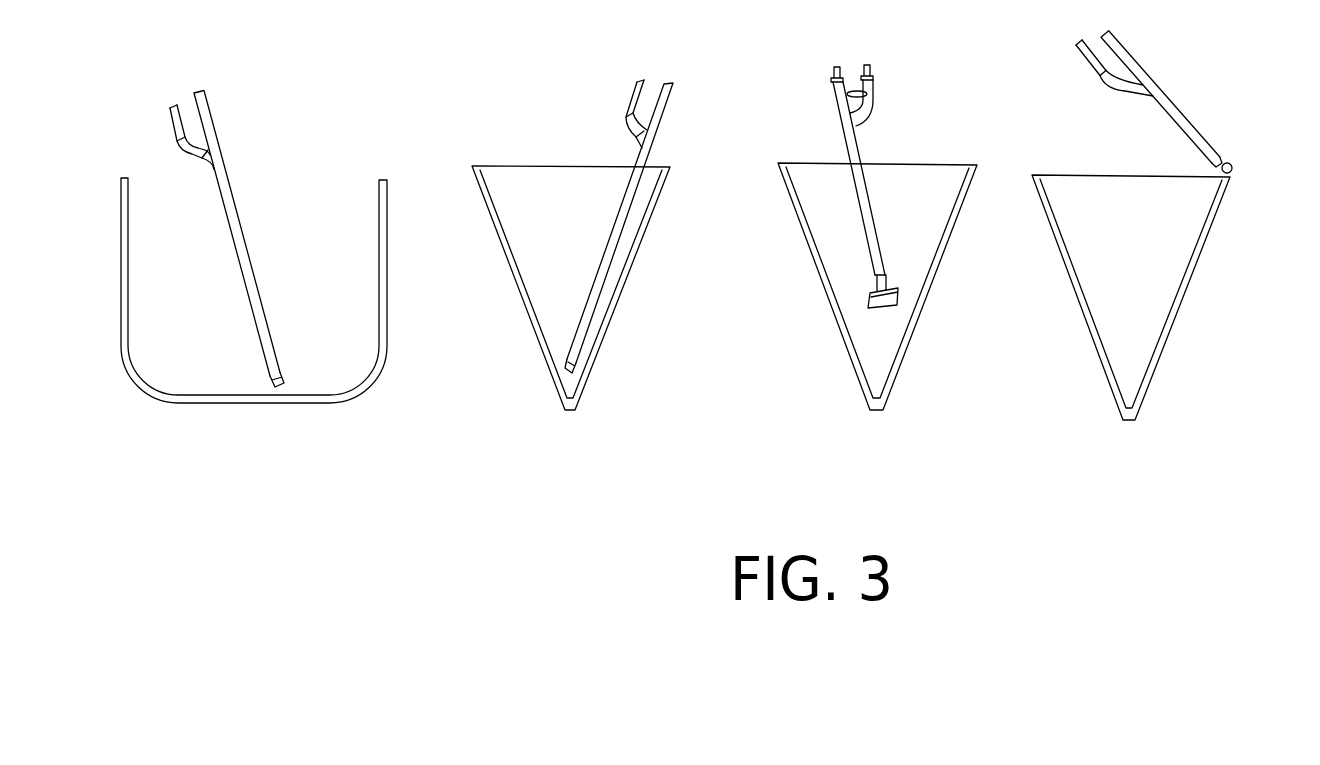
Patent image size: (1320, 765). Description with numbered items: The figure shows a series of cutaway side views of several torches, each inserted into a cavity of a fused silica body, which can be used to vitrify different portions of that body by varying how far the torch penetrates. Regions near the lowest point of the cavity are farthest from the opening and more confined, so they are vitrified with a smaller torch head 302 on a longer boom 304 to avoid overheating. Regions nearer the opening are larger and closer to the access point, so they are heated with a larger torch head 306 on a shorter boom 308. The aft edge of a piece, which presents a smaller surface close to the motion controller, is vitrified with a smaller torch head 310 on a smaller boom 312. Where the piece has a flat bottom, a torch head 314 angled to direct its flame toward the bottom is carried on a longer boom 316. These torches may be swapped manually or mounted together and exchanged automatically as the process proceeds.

The smaller torch head 302 is at (565, 372).
The longer boom 304 is at (597, 260).
The larger torch head 306 is at (878, 308).
The shorter boom 308 is at (860, 216).
The smaller torch head 310 is at (1233, 170).
The smaller boom 312 is at (1177, 105).
The angled torch head 314 is at (267, 386).
The longer boom 316 is at (232, 248).